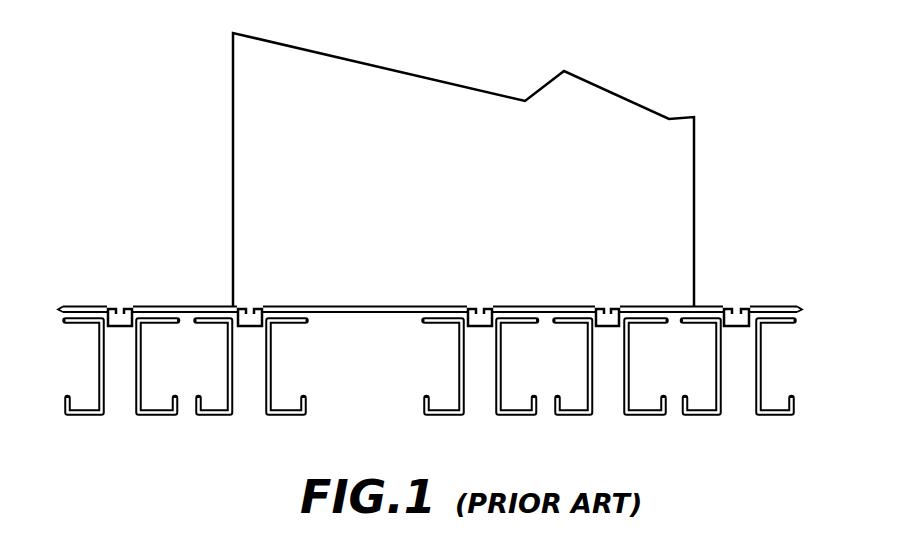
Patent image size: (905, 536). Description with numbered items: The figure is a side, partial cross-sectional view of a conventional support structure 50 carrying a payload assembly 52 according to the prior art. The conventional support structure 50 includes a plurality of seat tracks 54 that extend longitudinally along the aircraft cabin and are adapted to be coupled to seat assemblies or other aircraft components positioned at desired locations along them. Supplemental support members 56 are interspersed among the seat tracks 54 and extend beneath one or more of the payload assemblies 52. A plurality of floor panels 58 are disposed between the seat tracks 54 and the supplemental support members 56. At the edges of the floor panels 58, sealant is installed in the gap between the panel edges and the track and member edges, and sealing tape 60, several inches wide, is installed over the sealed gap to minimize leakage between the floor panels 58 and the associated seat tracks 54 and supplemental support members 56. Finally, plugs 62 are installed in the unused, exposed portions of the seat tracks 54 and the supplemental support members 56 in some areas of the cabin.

The conventional support structure 50 is at (146, 150).
The payload assembly 52 is at (232, 77).
The seat track 54 is at (92, 372).
The supplemental support member 56 is at (276, 368).
The floor panel 58 is at (197, 304).
The sealing tape 60 is at (136, 305).
The plug 62 is at (250, 305).